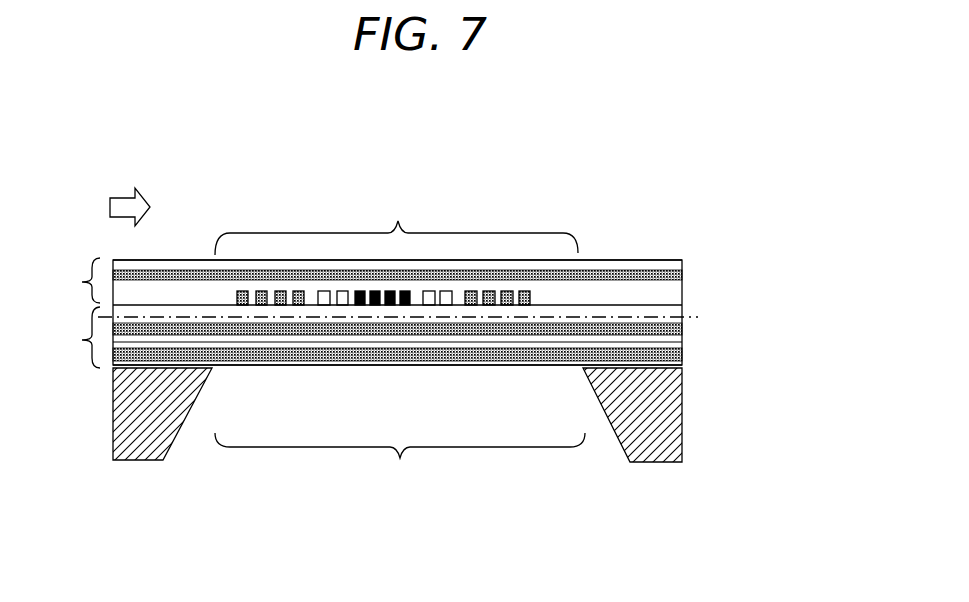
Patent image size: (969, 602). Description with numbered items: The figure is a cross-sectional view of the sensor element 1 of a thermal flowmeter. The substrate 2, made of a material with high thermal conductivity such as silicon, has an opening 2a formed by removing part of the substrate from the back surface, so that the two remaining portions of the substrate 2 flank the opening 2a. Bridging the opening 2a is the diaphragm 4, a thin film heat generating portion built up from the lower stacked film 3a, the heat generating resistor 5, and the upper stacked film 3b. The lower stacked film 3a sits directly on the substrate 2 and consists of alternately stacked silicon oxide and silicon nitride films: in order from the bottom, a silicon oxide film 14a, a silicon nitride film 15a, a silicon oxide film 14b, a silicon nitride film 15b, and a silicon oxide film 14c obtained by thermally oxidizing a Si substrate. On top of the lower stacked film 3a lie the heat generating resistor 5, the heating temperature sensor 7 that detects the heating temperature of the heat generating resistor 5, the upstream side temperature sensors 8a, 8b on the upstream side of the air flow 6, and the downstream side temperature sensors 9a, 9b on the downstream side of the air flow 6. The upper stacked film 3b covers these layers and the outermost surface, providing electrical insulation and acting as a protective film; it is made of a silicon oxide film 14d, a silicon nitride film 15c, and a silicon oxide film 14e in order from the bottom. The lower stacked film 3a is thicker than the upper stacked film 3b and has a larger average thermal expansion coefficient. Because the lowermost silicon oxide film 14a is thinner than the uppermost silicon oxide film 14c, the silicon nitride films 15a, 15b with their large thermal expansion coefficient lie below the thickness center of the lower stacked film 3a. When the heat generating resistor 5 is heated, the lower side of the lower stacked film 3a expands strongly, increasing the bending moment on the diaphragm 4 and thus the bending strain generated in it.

The sensor element 1 is at (132, 480).
The substrate 2 is at (128, 427).
The opening 2a is at (601, 455).
The lower stacked film 3a is at (66, 337).
The upper stacked film 3b is at (66, 280).
The diaphragm 4 is at (400, 343).
The heat generating resistor 5 is at (388, 291).
The air flow 6 is at (126, 205).
The heating temperature sensor 7 is at (342, 291).
The upstream side temperature sensor 8a is at (245, 206).
The upstream side temperature sensor 8b is at (278, 291).
The downstream side temperature sensor 9a is at (520, 239).
The downstream side temperature sensor 9b is at (501, 291).
The silicon oxide film 14a is at (677, 365).
The silicon oxide film 14b is at (675, 340).
The silicon oxide film 14c is at (675, 317).
The silicon oxide film 14d is at (673, 293).
The silicon oxide film 14e is at (667, 265).
The silicon nitride film 15a is at (330, 356).
The silicon nitride film 15b is at (383, 338).
The silicon nitride film 15c is at (630, 275).